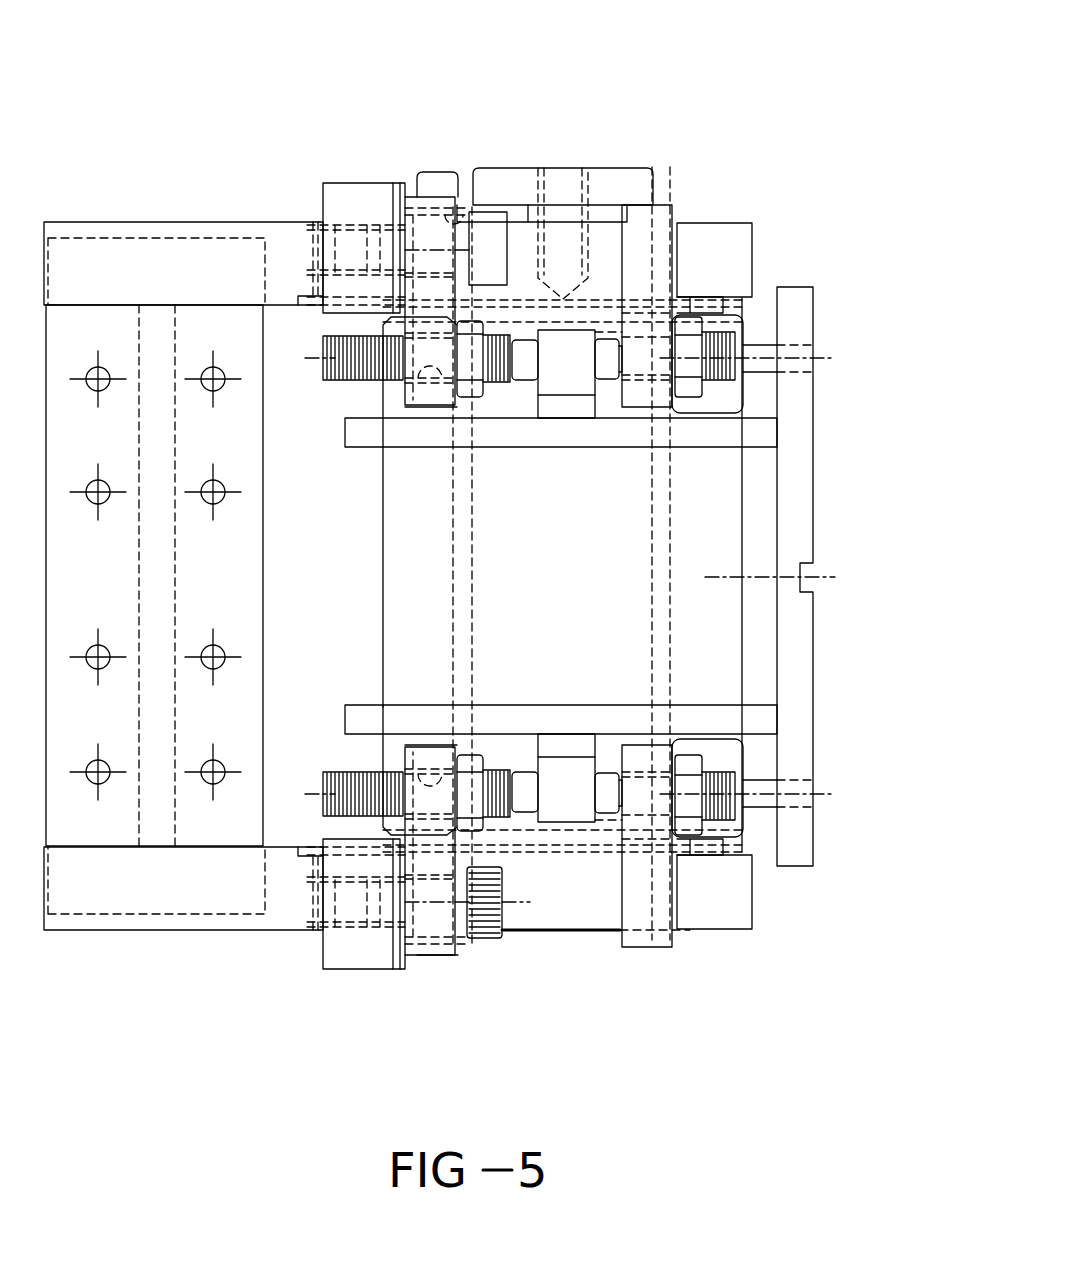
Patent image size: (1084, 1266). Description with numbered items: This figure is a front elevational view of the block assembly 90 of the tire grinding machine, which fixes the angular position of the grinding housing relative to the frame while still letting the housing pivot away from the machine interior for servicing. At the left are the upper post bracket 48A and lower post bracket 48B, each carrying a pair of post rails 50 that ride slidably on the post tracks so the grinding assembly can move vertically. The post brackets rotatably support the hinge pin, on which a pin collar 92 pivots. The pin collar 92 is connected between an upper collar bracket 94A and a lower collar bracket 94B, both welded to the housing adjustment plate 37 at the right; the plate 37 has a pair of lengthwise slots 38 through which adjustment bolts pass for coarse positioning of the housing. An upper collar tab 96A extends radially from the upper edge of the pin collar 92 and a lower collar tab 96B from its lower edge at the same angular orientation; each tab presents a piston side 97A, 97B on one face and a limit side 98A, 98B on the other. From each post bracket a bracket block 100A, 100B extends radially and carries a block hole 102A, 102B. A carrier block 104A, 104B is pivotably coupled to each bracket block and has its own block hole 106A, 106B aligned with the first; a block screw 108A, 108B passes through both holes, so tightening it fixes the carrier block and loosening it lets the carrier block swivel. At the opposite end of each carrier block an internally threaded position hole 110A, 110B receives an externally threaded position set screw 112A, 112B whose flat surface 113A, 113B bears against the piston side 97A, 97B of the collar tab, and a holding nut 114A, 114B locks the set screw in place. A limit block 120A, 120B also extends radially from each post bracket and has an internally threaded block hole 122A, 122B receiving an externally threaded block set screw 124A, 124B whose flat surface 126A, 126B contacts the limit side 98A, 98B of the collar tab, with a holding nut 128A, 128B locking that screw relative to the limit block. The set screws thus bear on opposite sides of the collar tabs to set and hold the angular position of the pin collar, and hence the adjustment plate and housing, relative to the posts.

The block assembly 90 is at (158, 106).
The upper post bracket 48A is at (115, 272).
The lower post bracket 48B is at (110, 880).
The post rails 50 is at (62, 578).
The pin collar 92 is at (540, 590).
The housing adjustment plate 37 is at (792, 540).
The lengthwise slots 38 is at (813, 358).
The upper collar bracket 94A is at (722, 435).
The lower collar bracket 94B is at (722, 718).
The upper collar tab 96A is at (565, 410).
The lower collar tab 96B is at (565, 740).
The piston side 97A is at (530, 414).
The piston side 97B is at (530, 740).
The limit side 98A is at (593, 407).
The limit side 98B is at (593, 745).
The bracket block 100A is at (345, 187).
The bracket block 100B is at (340, 957).
The block hole 102A is at (318, 243).
The block hole 102B is at (305, 907).
The carrier block 104A is at (431, 198).
The carrier block 104B is at (428, 953).
The block hole 106A is at (463, 212).
The block hole 106B is at (450, 945).
The block screw 108A is at (503, 212).
The block screw 108B is at (495, 940).
The position hole 110A is at (438, 376).
The position hole 110B is at (438, 777).
The position set screw 112A is at (333, 383).
The position set screw 112B is at (333, 770).
The flat surface 113A is at (530, 335).
The flat surface 113B is at (530, 817).
The holding nut 114A is at (475, 396).
The holding nut 114B is at (478, 757).
The limit block 120A is at (660, 205).
The limit block 120B is at (658, 947).
The block hole 122A is at (690, 355).
The block hole 122B is at (690, 905).
The block set screw 124A is at (790, 330).
The block set screw 124B is at (790, 822).
The flat surface 126A is at (606, 343).
The flat surface 126B is at (606, 809).
The holding nut 128A is at (690, 387).
The holding nut 128B is at (690, 768).